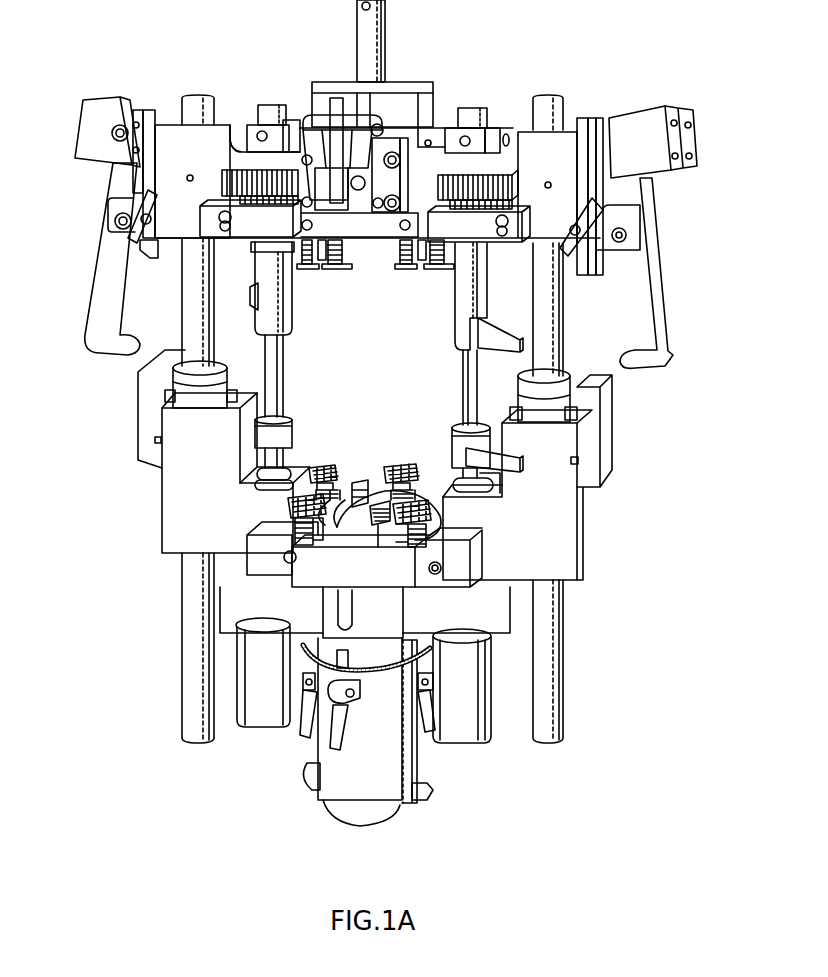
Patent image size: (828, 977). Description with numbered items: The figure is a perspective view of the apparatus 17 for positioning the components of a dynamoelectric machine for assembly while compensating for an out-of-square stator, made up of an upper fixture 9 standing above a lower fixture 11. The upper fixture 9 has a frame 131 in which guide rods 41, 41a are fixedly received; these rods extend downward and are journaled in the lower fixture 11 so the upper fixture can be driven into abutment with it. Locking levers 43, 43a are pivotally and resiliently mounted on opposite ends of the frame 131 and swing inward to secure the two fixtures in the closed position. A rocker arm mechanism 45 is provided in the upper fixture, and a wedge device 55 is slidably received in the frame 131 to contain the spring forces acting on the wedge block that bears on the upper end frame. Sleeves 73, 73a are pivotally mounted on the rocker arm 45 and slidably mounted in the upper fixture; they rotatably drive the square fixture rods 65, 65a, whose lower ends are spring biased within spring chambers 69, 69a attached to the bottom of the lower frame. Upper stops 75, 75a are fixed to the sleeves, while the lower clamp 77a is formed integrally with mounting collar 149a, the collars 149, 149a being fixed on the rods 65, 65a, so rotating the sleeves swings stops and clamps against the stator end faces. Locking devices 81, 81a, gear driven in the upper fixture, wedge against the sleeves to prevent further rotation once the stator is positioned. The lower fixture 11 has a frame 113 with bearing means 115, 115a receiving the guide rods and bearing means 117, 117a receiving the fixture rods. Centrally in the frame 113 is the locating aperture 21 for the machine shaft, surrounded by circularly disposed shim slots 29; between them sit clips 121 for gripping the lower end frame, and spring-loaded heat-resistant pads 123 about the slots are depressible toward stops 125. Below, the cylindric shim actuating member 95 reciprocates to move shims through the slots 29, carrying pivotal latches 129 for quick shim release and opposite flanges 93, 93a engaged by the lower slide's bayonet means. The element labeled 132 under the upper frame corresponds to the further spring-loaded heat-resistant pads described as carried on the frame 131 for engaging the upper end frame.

The upper fixture 9 is at (661, 191).
The lower fixture 11 is at (607, 527).
The apparatus for positioning components of dynamoelectric machine 17 is at (597, 75).
The locating aperture 21 is at (363, 514).
The shim slots 29 is at (347, 492).
The guide rod 41 is at (185, 296).
The guide rod 41a is at (564, 316).
The fixture locking lever 43 is at (97, 313).
The fixture locking lever 43a is at (655, 311).
The rocker arm mechanism 45 is at (442, 114).
The wedge device 55 is at (337, 208).
The fixture rod 65 is at (288, 382).
The fixture rod 65a is at (461, 397).
The spring chamber 69 is at (268, 717).
The spring chamber 69a is at (492, 730).
The sleeve 73 is at (293, 314).
The sleeve 73a is at (466, 305).
The upper finger or stop 75 is at (253, 300).
The upper finger or stop 75a is at (495, 326).
The lower finger or clamp 77a is at (512, 464).
The locking device 81 is at (236, 182).
The locking device 81a is at (507, 190).
The flange 93 is at (312, 792).
The flange 93a is at (425, 797).
The cylindric shim actuating member 95 is at (410, 762).
The fixture frame 113 is at (178, 532).
The guide or bearing means 115 is at (187, 386).
The guide or bearing means 115a is at (527, 395).
The guide or bearing means 117 is at (263, 488).
The guide or bearing means 117a is at (493, 492).
The clip 121 is at (381, 522).
The spring loaded heat resistant pad 123 is at (292, 507).
The stop 125 is at (292, 548).
The latch 129 is at (342, 732).
The fixture frame 131 is at (165, 128).
The springs 132 is at (430, 273).
The mounting collar 149 is at (262, 441).
The mounting collar 149a is at (455, 447).